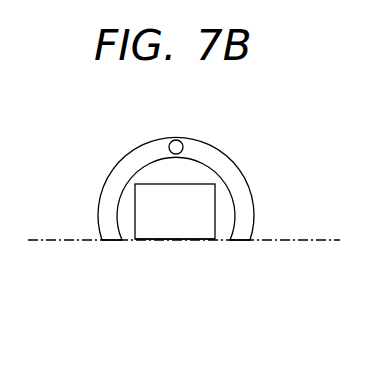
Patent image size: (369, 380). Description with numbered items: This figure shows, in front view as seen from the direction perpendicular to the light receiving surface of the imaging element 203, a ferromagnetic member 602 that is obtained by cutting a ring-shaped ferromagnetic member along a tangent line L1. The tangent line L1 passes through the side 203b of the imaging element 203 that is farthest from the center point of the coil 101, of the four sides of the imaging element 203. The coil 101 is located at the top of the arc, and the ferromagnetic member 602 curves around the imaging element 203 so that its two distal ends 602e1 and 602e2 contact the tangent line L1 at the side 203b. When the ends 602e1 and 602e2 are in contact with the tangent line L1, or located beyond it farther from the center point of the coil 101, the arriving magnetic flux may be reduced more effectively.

The coil 101 is at (176, 140).
The imaging element 203 is at (149, 197).
The side farthest from the coil 203b is at (176, 242).
The ferromagnetic member 602 is at (236, 178).
The end of the ferromagnetic member 602e1 is at (108, 243).
The end of the ferromagnetic member 602e2 is at (238, 243).
The tangent line L1 is at (73, 244).